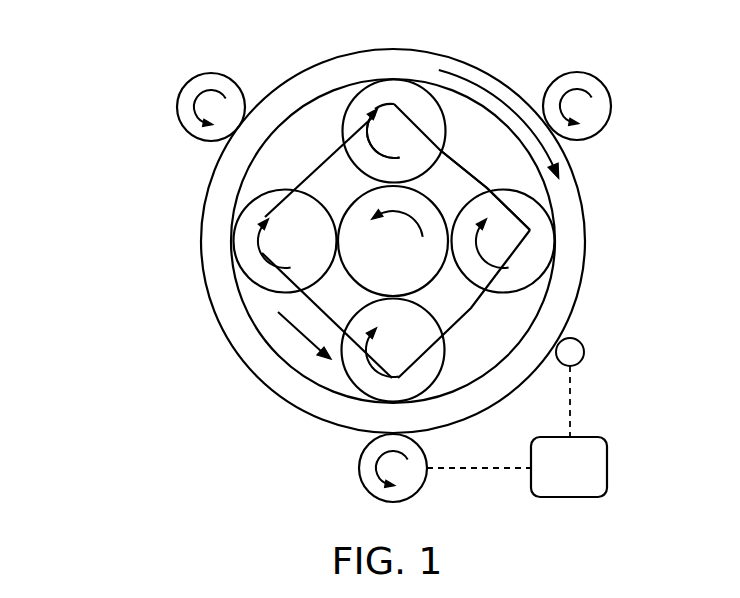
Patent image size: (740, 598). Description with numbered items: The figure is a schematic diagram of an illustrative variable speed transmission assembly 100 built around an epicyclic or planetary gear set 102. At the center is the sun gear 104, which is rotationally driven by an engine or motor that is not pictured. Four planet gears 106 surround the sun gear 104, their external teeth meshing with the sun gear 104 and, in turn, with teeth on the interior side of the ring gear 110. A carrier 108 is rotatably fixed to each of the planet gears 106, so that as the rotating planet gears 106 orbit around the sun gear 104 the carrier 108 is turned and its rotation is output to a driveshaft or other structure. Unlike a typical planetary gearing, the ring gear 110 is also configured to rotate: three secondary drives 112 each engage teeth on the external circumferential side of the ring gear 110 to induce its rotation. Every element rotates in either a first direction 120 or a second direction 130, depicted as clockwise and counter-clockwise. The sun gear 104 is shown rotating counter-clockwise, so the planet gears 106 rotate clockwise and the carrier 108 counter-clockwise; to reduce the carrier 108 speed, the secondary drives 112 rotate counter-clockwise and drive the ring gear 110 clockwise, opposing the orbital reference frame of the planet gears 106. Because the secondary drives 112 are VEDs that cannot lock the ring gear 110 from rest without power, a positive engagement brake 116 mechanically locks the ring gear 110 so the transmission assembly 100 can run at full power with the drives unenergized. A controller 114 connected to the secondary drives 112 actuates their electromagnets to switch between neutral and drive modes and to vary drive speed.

The variable speed transmission assembly 100 is at (95, 125).
The planetary gear set 102 is at (614, 226).
The sun gear 104 is at (340, 273).
The planet gears 106 is at (396, 79).
The carrier 108 is at (526, 215).
The ring gear 110 is at (203, 262).
The secondary drives 112 is at (230, 74).
The controller 114 is at (573, 498).
The positive engagement brake 116 is at (585, 350).
The first direction 120 is at (368, 141).
The second direction 130 is at (422, 237).